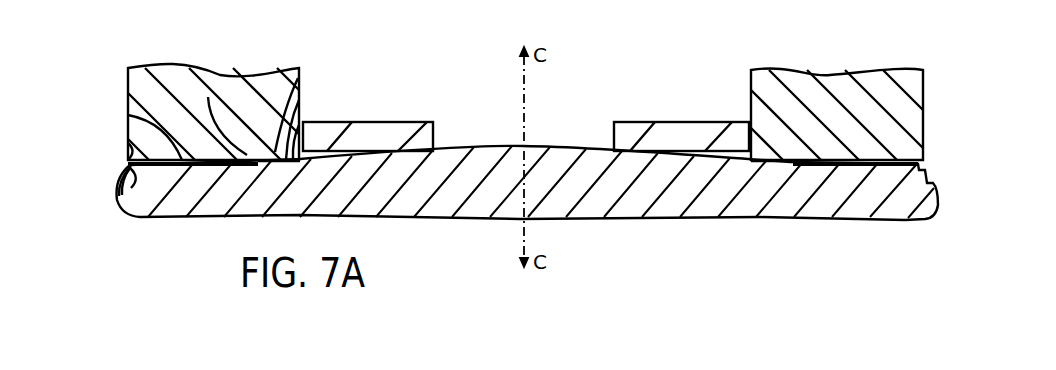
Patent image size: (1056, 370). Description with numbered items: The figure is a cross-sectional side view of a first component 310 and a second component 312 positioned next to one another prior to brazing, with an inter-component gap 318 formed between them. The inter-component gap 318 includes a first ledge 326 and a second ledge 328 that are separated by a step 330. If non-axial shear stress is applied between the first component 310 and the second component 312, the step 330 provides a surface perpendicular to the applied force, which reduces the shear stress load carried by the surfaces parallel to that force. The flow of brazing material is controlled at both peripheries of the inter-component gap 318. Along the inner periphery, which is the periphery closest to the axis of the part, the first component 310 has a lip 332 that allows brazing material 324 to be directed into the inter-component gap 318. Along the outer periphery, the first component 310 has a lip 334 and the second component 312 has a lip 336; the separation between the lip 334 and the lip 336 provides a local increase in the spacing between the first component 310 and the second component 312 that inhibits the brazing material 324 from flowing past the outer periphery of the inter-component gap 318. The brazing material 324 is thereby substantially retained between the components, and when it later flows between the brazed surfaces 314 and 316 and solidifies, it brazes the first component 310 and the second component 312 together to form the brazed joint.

The first component 310 is at (283, 76).
The second component 312 is at (466, 218).
The brazed surface 314 is at (128, 111).
The brazed surface 316 is at (238, 167).
The inter-component gap 318 is at (164, 171).
The brazing material 324 is at (428, 135).
The first ledge 326 is at (275, 152).
The second ledge 328 is at (205, 171).
The step 330 is at (247, 155).
The lip 332 is at (299, 128).
The lip 334 is at (128, 146).
The lip 336 is at (122, 190).